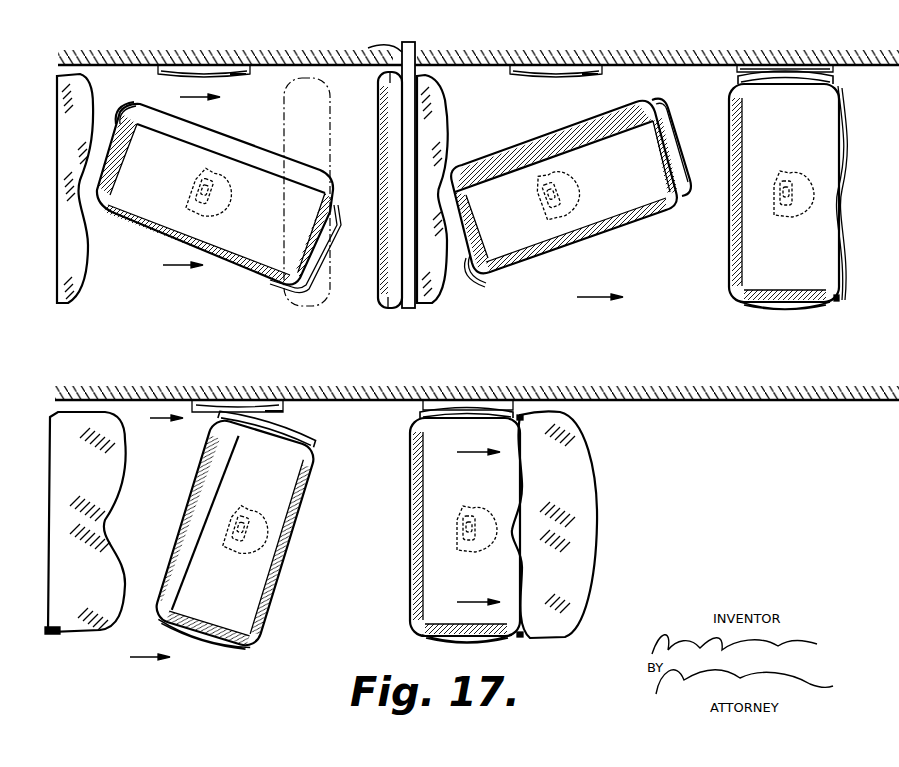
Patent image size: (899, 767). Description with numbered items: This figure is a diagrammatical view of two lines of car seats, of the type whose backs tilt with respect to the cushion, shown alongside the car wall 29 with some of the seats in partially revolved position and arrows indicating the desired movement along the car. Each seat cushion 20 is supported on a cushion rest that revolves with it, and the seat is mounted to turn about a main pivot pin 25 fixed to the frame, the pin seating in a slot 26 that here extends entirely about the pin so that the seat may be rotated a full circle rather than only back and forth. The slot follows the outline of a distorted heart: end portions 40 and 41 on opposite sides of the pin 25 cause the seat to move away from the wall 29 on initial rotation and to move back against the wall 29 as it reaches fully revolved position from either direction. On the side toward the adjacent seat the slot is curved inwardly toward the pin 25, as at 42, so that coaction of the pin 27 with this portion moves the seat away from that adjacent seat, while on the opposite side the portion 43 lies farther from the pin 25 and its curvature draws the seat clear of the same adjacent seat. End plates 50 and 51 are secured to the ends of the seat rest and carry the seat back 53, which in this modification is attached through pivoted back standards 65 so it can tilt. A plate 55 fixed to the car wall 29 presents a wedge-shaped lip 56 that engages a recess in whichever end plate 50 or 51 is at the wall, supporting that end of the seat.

The seat cushion 20 is at (153, 108).
The main pivot pin 25 is at (222, 184).
The slot 26 is at (233, 187).
The pin 27 is at (224, 204).
The car wall 29 is at (445, 58).
The slot end portion 40 is at (212, 212).
The slot end portion 41 is at (207, 177).
The inwardly curved slot portion 42 is at (207, 200).
The outer slot portion 43 is at (228, 200).
The end plate 50 is at (325, 248).
The end plate 51 is at (125, 118).
The seat back 53 is at (87, 260).
The plate 55 is at (224, 67).
The wedge-shaped lip 56 is at (231, 74).
The back standards 65 is at (838, 301).